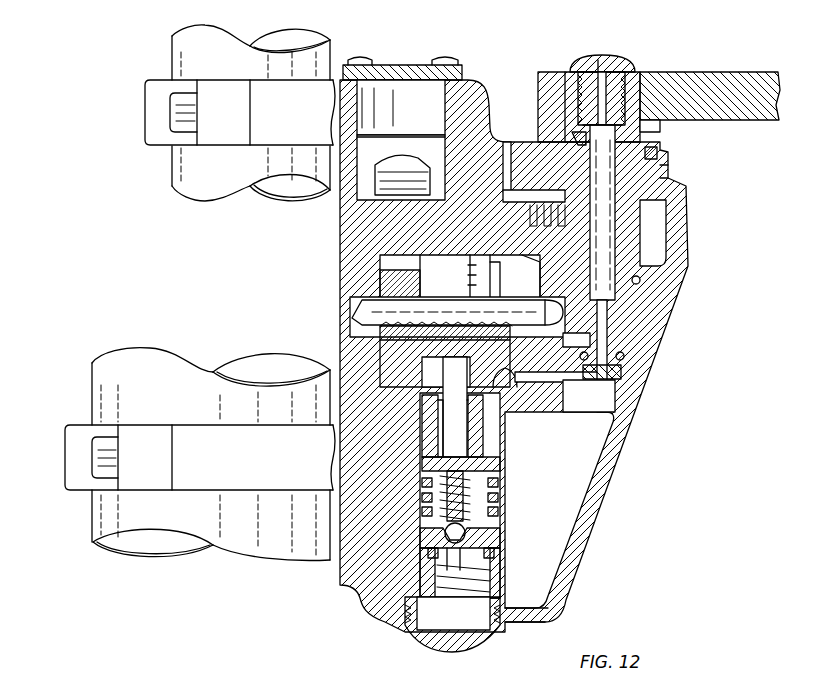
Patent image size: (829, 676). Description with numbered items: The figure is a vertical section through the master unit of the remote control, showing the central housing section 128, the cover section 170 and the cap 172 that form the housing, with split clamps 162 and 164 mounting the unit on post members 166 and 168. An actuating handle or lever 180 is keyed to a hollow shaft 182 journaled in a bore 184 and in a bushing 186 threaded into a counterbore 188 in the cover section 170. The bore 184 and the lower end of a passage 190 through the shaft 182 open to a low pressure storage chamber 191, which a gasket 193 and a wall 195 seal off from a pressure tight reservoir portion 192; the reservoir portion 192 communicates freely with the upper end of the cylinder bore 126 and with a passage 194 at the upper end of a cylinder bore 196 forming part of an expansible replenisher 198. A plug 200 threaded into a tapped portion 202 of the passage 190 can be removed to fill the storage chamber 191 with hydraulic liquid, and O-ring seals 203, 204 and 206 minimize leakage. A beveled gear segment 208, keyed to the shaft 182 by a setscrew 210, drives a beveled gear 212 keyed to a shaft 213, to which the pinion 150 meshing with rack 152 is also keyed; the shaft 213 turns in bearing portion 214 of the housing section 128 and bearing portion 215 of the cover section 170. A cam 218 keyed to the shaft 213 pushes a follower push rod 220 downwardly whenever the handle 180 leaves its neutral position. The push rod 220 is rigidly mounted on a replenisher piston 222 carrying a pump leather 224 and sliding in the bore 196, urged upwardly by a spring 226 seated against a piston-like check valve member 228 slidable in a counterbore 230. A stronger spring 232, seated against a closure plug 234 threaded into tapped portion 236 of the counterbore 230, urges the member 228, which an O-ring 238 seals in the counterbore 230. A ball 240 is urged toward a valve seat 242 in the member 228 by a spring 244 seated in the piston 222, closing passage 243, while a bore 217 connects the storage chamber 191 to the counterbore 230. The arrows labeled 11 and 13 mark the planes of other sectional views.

The section line 11 is at (425, 271).
The section line 13 is at (480, 291).
The cylinder portion or bore 126 is at (423, 104).
The central housing section 128 is at (342, 570).
The driving pinion 150 is at (360, 266).
The rack 152 is at (386, 193).
The split clamp 162 is at (150, 92).
The split clamp 164 is at (82, 438).
The post member 166 is at (186, 170).
The post member 168 is at (108, 514).
The cover section 170 is at (680, 253).
The cap 172 is at (413, 66).
The actuating handle or lever 180 is at (714, 72).
The hollow shaft 182 is at (658, 320).
The bore 184 is at (640, 280).
The bushing 186 is at (650, 133).
The counterbore 188 is at (668, 180).
The passage 190 is at (620, 285).
The low pressure storage chamber 191 is at (573, 488).
The pressure tight reservoir portion 192 is at (608, 414).
The gasket 193 is at (503, 150).
The passage 194 is at (484, 406).
The wall 195 is at (505, 372).
The cylinder bore 196 is at (480, 432).
The expansible replenisher 198 is at (520, 548).
The plug 200 is at (603, 40).
The tapped portion 202 is at (590, 92).
The O-ring seal 203 is at (575, 134).
The O-ring seal 204 is at (660, 154).
The O-ring seal 206 is at (626, 354).
The beveled gear segment 208 is at (663, 220).
The setscrew 210 is at (520, 194).
The beveled gear 212 is at (517, 392).
The shaft 213 is at (356, 308).
The bearing portion 214 is at (360, 334).
The bearing portion 215 is at (552, 310).
The bore 217 is at (548, 614).
The cam 218 is at (430, 390).
The follower push rod 220 is at (435, 400).
The replenisher piston 222 is at (492, 478).
The pump leather 224 is at (432, 435).
The spring 226 is at (422, 482).
The check valve member 228 is at (515, 590).
The counterbore 230 is at (405, 620).
The spring 232 is at (470, 640).
The closure plug 234 is at (440, 645).
The tapped portion 236 is at (505, 627).
The O-ring 238 is at (425, 552).
The ball 240 is at (438, 520).
The valve seat 242 is at (495, 522).
The passage 243 is at (425, 575).
The spring 244 is at (497, 493).